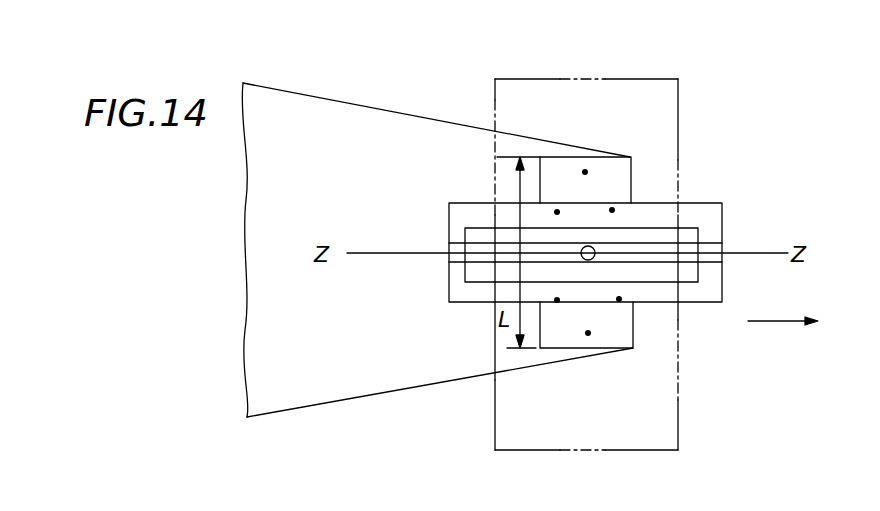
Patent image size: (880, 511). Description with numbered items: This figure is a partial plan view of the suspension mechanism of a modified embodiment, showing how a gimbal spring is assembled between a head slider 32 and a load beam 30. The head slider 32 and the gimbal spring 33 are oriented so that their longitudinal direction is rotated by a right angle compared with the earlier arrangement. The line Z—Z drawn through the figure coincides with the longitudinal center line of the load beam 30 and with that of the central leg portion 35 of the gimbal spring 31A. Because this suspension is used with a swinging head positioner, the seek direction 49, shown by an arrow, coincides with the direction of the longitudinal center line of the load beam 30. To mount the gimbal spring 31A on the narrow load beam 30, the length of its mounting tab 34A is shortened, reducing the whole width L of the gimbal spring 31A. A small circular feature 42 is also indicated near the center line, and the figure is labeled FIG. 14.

The load beam 30 is at (362, 105).
The head slider 32 is at (677, 96).
The gimbal spring 33 is at (630, 157).
The gimbal spring 31A is at (710, 203).
The central leg portion 35 is at (647, 256).
The pivot / aperture 42 is at (588, 261).
The mounting tab 34A is at (627, 348).
The seek direction 49 is at (783, 341).